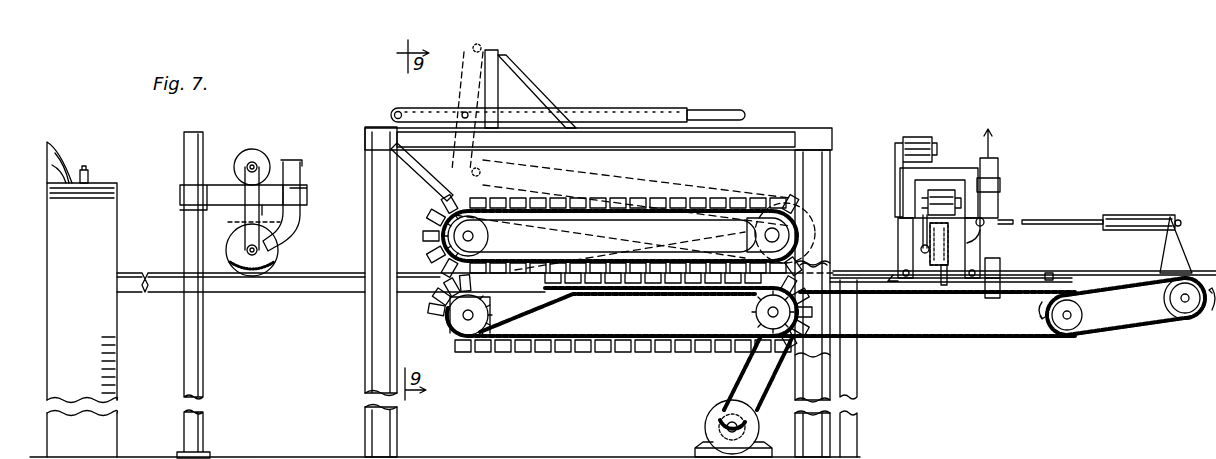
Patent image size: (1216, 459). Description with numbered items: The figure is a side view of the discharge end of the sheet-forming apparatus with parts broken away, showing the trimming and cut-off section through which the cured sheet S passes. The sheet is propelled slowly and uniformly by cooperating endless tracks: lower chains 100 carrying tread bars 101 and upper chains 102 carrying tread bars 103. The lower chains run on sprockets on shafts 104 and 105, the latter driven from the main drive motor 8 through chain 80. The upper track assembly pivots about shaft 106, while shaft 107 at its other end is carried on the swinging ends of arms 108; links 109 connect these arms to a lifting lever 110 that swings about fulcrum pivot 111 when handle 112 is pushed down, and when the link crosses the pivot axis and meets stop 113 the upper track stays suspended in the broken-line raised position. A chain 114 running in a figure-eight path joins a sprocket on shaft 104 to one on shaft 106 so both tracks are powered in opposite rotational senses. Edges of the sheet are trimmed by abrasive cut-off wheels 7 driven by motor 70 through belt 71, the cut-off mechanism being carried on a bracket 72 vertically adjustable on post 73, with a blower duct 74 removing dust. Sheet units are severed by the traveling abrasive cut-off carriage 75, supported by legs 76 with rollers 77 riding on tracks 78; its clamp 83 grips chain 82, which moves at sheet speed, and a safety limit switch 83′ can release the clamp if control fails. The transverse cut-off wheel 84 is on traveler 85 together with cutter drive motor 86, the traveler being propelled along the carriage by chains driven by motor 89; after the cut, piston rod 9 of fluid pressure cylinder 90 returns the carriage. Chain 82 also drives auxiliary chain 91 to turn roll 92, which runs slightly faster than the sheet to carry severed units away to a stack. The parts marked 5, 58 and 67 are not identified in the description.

The table 5 is at (338, 270).
The abrasive cut-off wheels 7 is at (280, 262).
The main drive motor 8 is at (710, 420).
The piston rod 9 is at (1043, 218).
The tank 58 is at (110, 227).
The burner 67 is at (87, 168).
The motor 70 is at (246, 148).
The belt 71 is at (243, 222).
The bracket 72 is at (222, 185).
The post 73 is at (192, 342).
The blower duct 74 is at (302, 180).
The traveling abrasive cut-off carriage 75 is at (945, 172).
The legs 76 is at (900, 247).
The rollers 77 is at (893, 275).
The tracks 78 is at (943, 285).
The chain 80 is at (730, 363).
The chain 82 is at (913, 295).
The clamp 83 is at (990, 298).
The safety limit switch 83′ is at (1000, 270).
The abrasive cut-off wheel 84 is at (947, 275).
The traveler 85 is at (992, 210).
The cutter drive motor 86 is at (945, 190).
The motor 89 is at (913, 138).
The fluid pressure cylinder 90 is at (1123, 215).
The auxiliary chain 91 is at (1113, 318).
The roll 92 is at (1177, 320).
The lower chains or belts 100 is at (600, 338).
The tread bars 101 is at (600, 352).
The upper chains or belts 102 is at (437, 225).
The tread bars 103 is at (735, 195).
The shaft 104 is at (445, 335).
The shaft 105 is at (752, 313).
The shaft 106 is at (778, 233).
The shaft 107 is at (442, 255).
The arms 108 is at (563, 247).
The links 109 is at (432, 192).
The lifting lever 110 is at (433, 113).
The fulcrum pivot 111 is at (470, 108).
The handle 112 is at (715, 110).
The stop 113 is at (492, 65).
The chain 114 is at (542, 305).
The sheet S is at (830, 272).